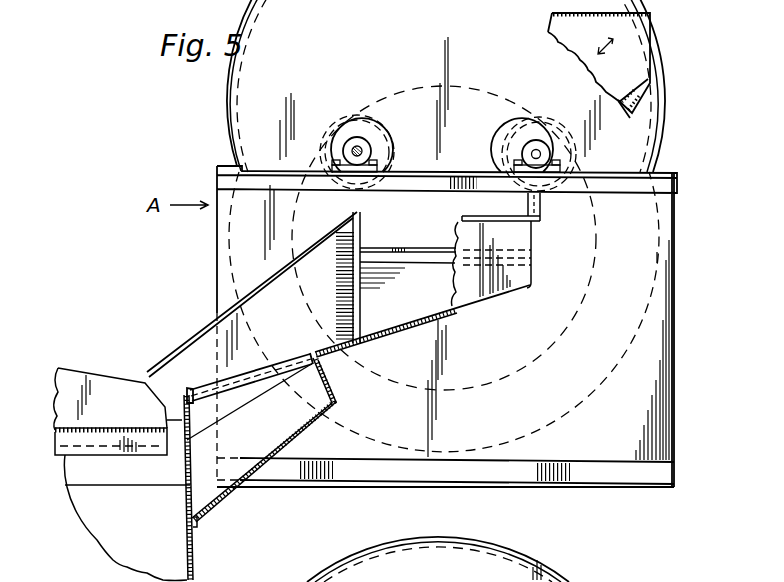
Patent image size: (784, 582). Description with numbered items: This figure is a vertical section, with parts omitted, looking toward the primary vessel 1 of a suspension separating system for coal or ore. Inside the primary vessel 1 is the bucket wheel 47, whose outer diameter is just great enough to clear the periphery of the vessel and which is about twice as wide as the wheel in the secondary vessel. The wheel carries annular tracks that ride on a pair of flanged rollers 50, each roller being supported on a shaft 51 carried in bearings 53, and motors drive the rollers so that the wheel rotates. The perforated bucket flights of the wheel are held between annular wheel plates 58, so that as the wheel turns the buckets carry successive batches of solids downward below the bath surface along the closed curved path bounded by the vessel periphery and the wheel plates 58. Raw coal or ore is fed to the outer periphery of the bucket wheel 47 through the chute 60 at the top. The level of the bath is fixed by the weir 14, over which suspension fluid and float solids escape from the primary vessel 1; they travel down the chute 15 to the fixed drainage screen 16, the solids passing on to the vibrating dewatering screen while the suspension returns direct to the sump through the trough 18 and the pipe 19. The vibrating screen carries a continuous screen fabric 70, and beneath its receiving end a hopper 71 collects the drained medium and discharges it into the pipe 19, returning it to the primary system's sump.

The primary vessel 1 is at (257, 112).
The weir 14 is at (401, 238).
The chute 15 is at (397, 314).
The fixed drainage screen 16 is at (258, 377).
The trough 18 is at (278, 433).
The pipe 19 is at (183, 573).
The bucket wheel 47 is at (663, 232).
The flanged rollers 50 is at (386, 131).
The shaft 51 is at (356, 146).
The bearings 53 is at (371, 149).
The annular wheel plates 58 is at (658, 257).
The chute 60 is at (641, 53).
The screen fabric 70 is at (102, 428).
The hopper 71 is at (82, 493).